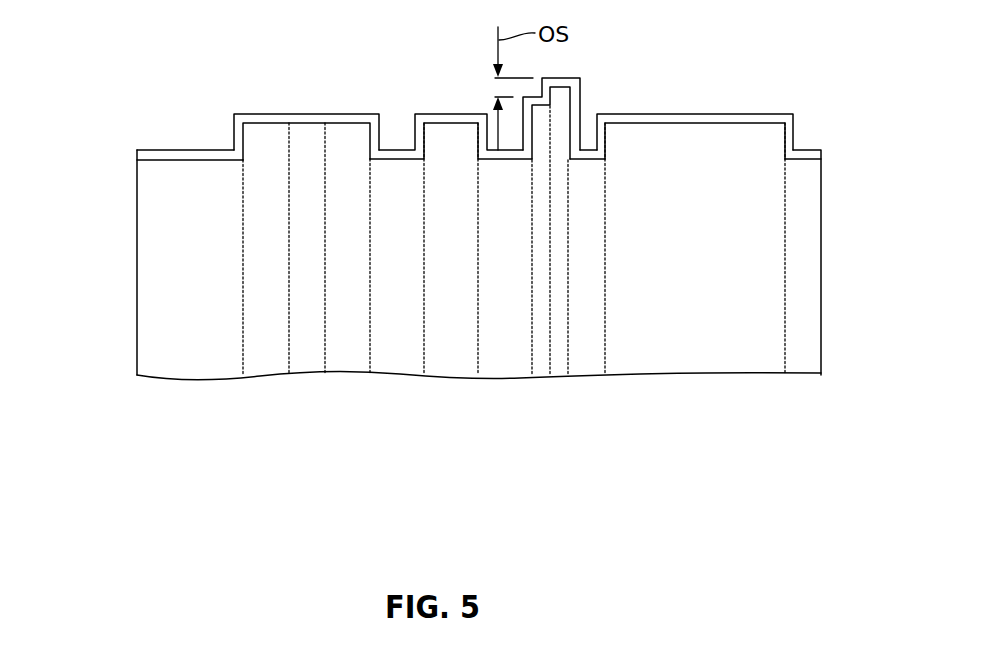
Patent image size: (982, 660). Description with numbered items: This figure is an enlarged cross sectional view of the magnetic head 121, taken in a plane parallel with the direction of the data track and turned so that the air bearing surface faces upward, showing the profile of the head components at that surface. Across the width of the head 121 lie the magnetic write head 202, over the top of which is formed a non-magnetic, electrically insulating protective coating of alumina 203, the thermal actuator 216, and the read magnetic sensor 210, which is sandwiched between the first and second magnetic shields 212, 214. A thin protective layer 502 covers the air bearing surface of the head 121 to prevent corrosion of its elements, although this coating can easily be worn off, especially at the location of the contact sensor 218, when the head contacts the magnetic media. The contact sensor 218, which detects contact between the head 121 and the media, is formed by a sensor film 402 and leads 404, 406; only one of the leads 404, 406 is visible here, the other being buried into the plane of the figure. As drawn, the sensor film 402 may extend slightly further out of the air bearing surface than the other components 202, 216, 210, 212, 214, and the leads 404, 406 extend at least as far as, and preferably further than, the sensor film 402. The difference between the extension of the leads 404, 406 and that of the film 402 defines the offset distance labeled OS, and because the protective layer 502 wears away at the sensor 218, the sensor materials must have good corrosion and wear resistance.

The magnetic head 121 is at (123, 348).
The protective layer 502 is at (320, 122).
The second magnetic shield 214 is at (257, 365).
The magnetic sensor 210 is at (317, 365).
The first magnetic shield 212 is at (344, 352).
The thermal actuator 216 is at (455, 362).
The contact sensor 218 is at (532, 382).
The sensor film 402 is at (540, 114).
The lead 404 is at (558, 113).
The lead 406 is at (613, 118).
The magnetic write head 202 is at (736, 229).
The alumina 203 is at (798, 232).